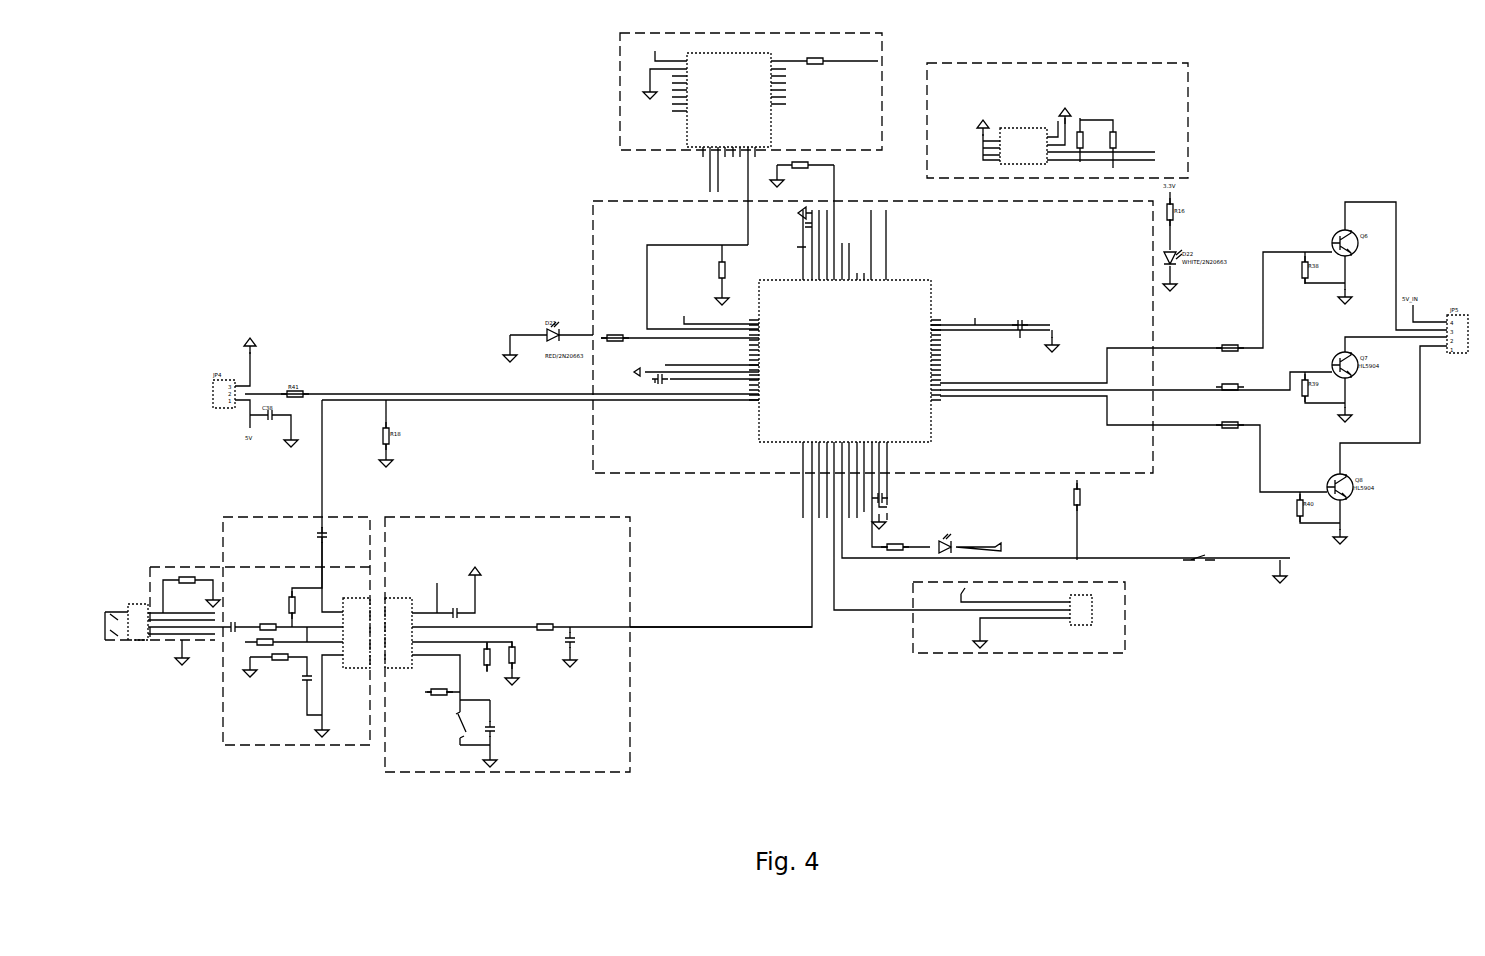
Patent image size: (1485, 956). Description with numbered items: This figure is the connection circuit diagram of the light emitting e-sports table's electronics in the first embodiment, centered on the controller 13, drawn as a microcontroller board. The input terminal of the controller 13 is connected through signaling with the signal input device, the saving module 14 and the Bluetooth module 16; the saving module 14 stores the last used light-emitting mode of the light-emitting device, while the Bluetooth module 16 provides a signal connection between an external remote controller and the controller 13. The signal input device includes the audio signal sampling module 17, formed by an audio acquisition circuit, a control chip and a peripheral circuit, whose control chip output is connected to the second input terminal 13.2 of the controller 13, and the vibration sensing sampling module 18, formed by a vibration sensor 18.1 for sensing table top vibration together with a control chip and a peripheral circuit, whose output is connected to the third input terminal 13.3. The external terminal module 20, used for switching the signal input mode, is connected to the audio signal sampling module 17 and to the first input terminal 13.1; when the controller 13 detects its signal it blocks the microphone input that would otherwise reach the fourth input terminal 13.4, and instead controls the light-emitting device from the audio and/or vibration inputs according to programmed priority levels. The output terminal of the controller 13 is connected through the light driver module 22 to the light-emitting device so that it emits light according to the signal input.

The controller 13 is at (591, 258).
The first input terminal 13.1 is at (865, 512).
The second input terminal 13.2 is at (757, 405).
The third input terminal 13.3 is at (812, 462).
The fourth input terminal 13.4 is at (803, 455).
The saving module 14 is at (1188, 133).
The Bluetooth module 16 is at (620, 100).
The audio signal sampling module 17 is at (262, 517).
The vibration sensing sampling module 18 is at (632, 707).
The vibration sensor 18.1 is at (455, 728).
The external terminal module 20 is at (175, 567).
The light driver module 22 is at (1033, 653).